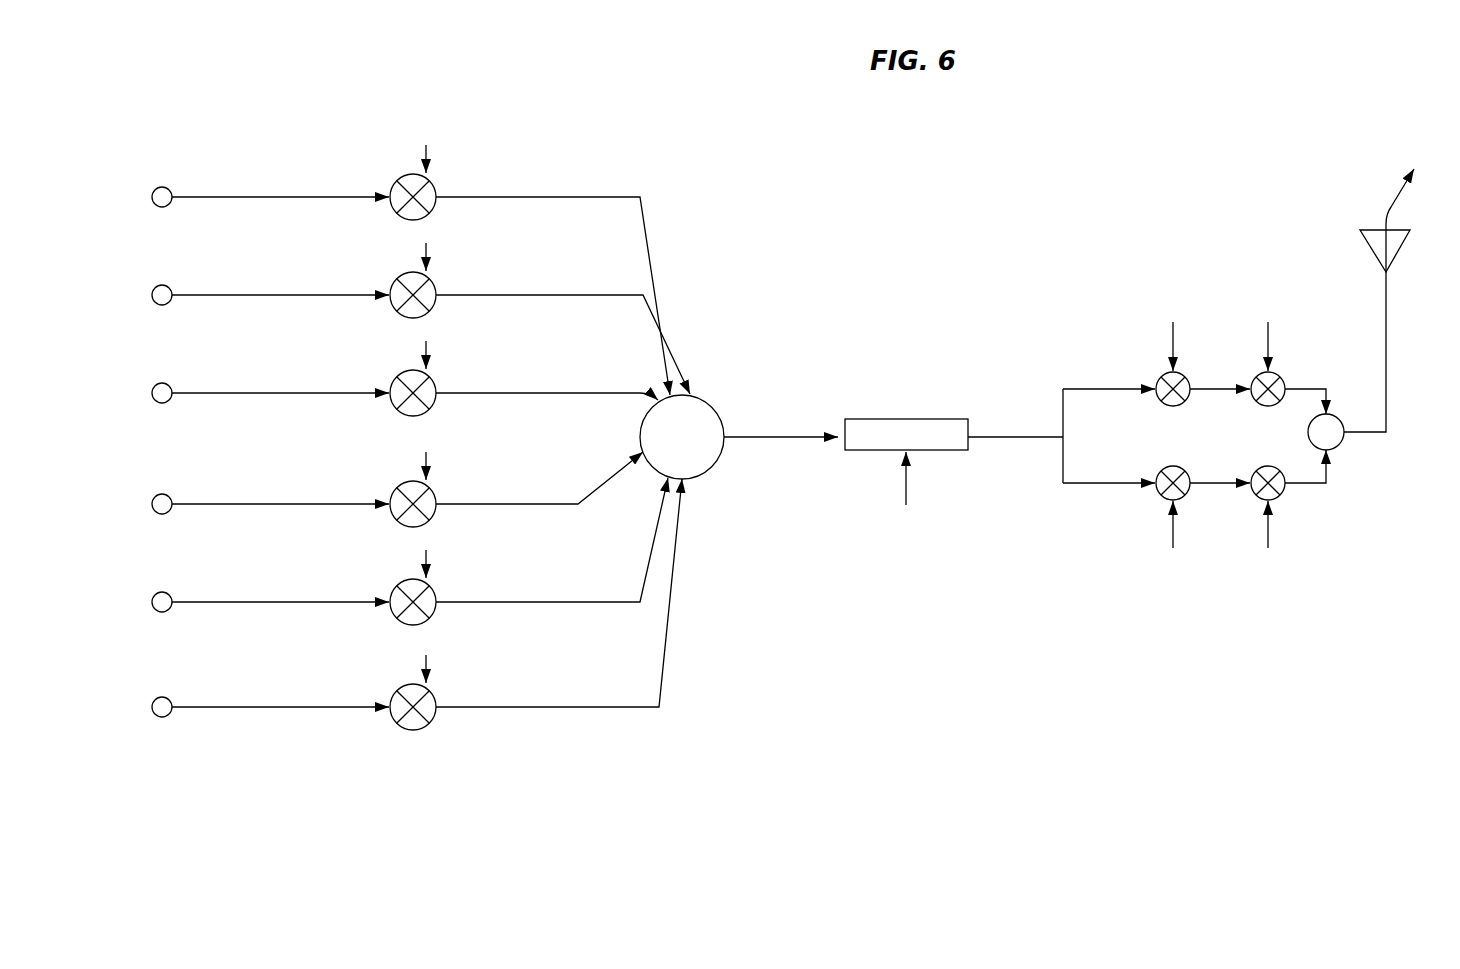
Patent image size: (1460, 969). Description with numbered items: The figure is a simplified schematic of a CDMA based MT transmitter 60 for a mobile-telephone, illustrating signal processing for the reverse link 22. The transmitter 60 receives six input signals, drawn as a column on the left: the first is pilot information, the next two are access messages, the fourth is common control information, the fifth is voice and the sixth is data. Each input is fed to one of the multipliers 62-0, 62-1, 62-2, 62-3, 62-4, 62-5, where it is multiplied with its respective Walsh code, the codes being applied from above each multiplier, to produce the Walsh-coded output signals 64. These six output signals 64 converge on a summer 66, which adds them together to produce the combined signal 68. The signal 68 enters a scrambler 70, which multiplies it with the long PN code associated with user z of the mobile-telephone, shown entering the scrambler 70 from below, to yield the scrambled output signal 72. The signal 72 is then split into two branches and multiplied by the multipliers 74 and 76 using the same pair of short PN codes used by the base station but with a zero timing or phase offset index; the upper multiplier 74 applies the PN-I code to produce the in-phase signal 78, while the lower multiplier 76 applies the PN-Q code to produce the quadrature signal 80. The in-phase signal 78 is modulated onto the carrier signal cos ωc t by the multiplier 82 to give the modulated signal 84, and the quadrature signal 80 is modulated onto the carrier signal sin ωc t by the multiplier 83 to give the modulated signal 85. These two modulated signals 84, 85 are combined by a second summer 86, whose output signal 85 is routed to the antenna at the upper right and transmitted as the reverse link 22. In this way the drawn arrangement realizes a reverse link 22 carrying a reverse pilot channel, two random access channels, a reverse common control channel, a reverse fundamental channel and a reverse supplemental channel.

The CDMA based MT transmitter 60 is at (952, 142).
The multiplier 62-0 is at (401, 216).
The multiplier 62-1 is at (401, 314).
The multiplier 62-2 is at (401, 412).
The multiplier 62-3 is at (401, 523).
The multiplier 62-4 is at (401, 621).
The multiplier 62-5 is at (401, 726).
The output signals S^mt_x 64 is at (563, 425).
The summer 66 is at (710, 474).
The signal S^mt 68 is at (787, 432).
The scrambler 70 is at (902, 418).
The output signal S^mt 72 is at (1016, 432).
The multiplier 74 is at (1160, 379).
The multiplier 76 is at (1160, 502).
The in-phase signal S^mt 78 is at (1207, 386).
The quadrature signal S^mt 80 is at (1196, 478).
The multiplier 82 is at (1254, 402).
The multiplier 83 is at (1283, 497).
The signal S^mt 84 is at (1307, 386).
The signal S^mt 85 is at (1313, 488).
The summer 86 is at (1307, 430).
The reverse link 22 is at (1393, 203).